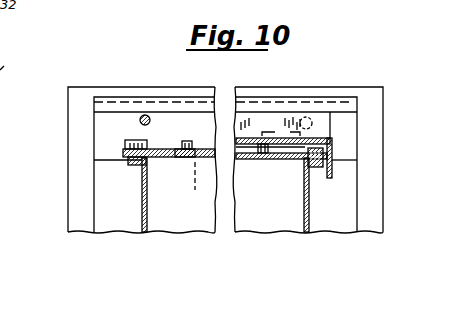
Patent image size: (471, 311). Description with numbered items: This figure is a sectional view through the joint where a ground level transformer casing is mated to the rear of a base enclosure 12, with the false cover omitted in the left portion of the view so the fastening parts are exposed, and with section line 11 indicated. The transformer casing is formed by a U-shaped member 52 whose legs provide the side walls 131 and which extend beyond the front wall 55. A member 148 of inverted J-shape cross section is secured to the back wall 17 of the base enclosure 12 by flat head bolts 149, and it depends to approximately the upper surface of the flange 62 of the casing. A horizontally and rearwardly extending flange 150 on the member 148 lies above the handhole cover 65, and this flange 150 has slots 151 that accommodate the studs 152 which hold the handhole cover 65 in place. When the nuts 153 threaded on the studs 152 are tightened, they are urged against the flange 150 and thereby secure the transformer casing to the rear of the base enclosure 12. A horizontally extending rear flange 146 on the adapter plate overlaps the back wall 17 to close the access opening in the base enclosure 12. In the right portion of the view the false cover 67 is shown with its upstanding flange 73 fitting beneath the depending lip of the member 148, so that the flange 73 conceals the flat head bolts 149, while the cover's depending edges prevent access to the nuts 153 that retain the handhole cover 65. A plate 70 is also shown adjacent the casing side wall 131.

The base enclosure 12 is at (383, 86).
The back wall 17 is at (372, 103).
The upstanding flange 73 is at (320, 128).
The member of inverted J-shape cross section 148 is at (104, 140).
The flat head bolts 149 is at (148, 115).
The horizontally and rearwardly extending flange 150 is at (214, 110).
The false cover 67 is at (243, 136).
The section line 11 is at (332, 65).
The handhole cover 65 is at (127, 151).
The nuts 153 is at (182, 148).
The flange 62 is at (130, 165).
The slots 151 is at (174, 158).
The studs 152 is at (192, 185).
The side walls 131 is at (141, 205).
The rear flange 146 is at (114, 204).
The U-shaped member 52 is at (139, 233).
The front wall 55 is at (183, 220).
The bracket plate 70 is at (331, 176).